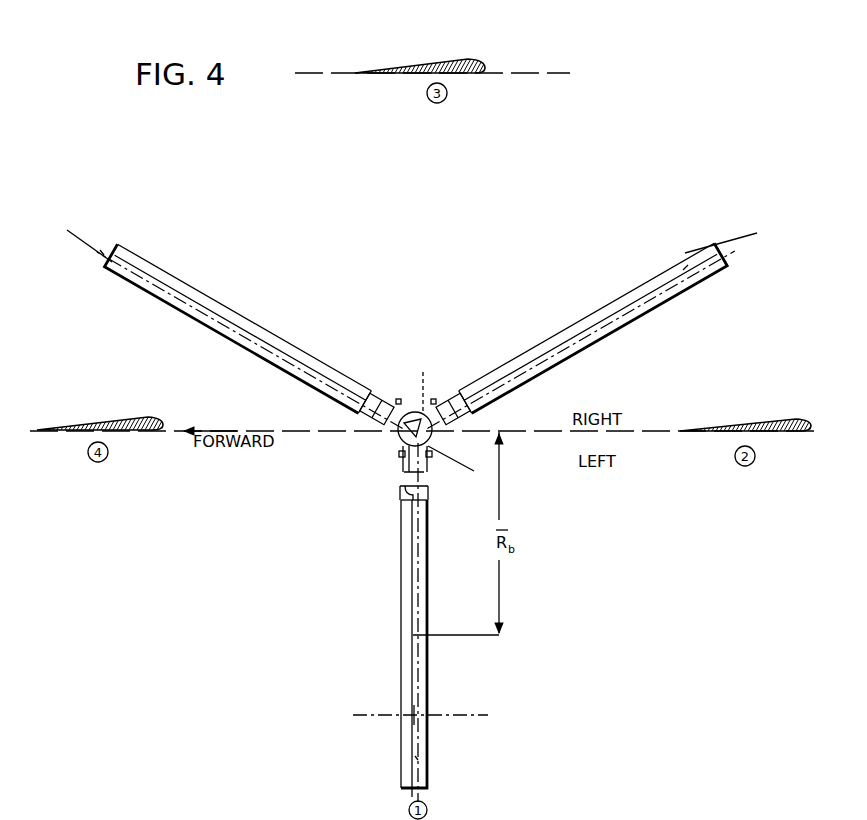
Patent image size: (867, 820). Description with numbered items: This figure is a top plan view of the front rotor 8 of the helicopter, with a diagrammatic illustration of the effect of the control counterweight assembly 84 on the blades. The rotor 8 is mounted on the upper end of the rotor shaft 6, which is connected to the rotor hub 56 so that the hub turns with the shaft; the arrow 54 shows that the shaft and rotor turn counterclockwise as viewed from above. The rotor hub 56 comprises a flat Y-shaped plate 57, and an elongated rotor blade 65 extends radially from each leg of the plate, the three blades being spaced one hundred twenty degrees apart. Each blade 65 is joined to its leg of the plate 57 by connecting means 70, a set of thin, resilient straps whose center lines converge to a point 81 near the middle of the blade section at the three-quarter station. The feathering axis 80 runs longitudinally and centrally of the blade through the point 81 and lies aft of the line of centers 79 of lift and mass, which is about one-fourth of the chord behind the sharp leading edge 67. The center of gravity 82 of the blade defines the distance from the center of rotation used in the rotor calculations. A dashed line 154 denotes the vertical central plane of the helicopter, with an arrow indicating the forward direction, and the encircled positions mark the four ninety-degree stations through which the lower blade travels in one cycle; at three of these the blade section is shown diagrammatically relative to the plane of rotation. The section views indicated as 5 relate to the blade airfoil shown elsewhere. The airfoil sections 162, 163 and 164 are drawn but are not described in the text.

The blade airfoil section at station 3 163 is at (447, 60).
The blade airfoil section at station 4 164 is at (131, 413).
The blade airfoil section at station 2 162 is at (772, 421).
The rotor blade 65 is at (188, 292).
The leading edge 67 is at (258, 357).
The feathering axis 80 is at (74, 233).
The line of centers of lift and mass 79 is at (96, 250).
The dashed line denoting vertical central plane 154 is at (306, 432).
The rotor hub 56 is at (396, 453).
The Y-shaped plate 57 is at (432, 449).
The connecting means 70 is at (392, 484).
The control counterweight assembly 84 is at (401, 403).
The rotor shaft 6 is at (431, 392).
The front rotor 8 is at (531, 317).
The arrow 54 is at (177, 326).
The center of gravity of blade 82 is at (414, 636).
The main wheels 5 is at (365, 713).
The point 81 is at (412, 714).